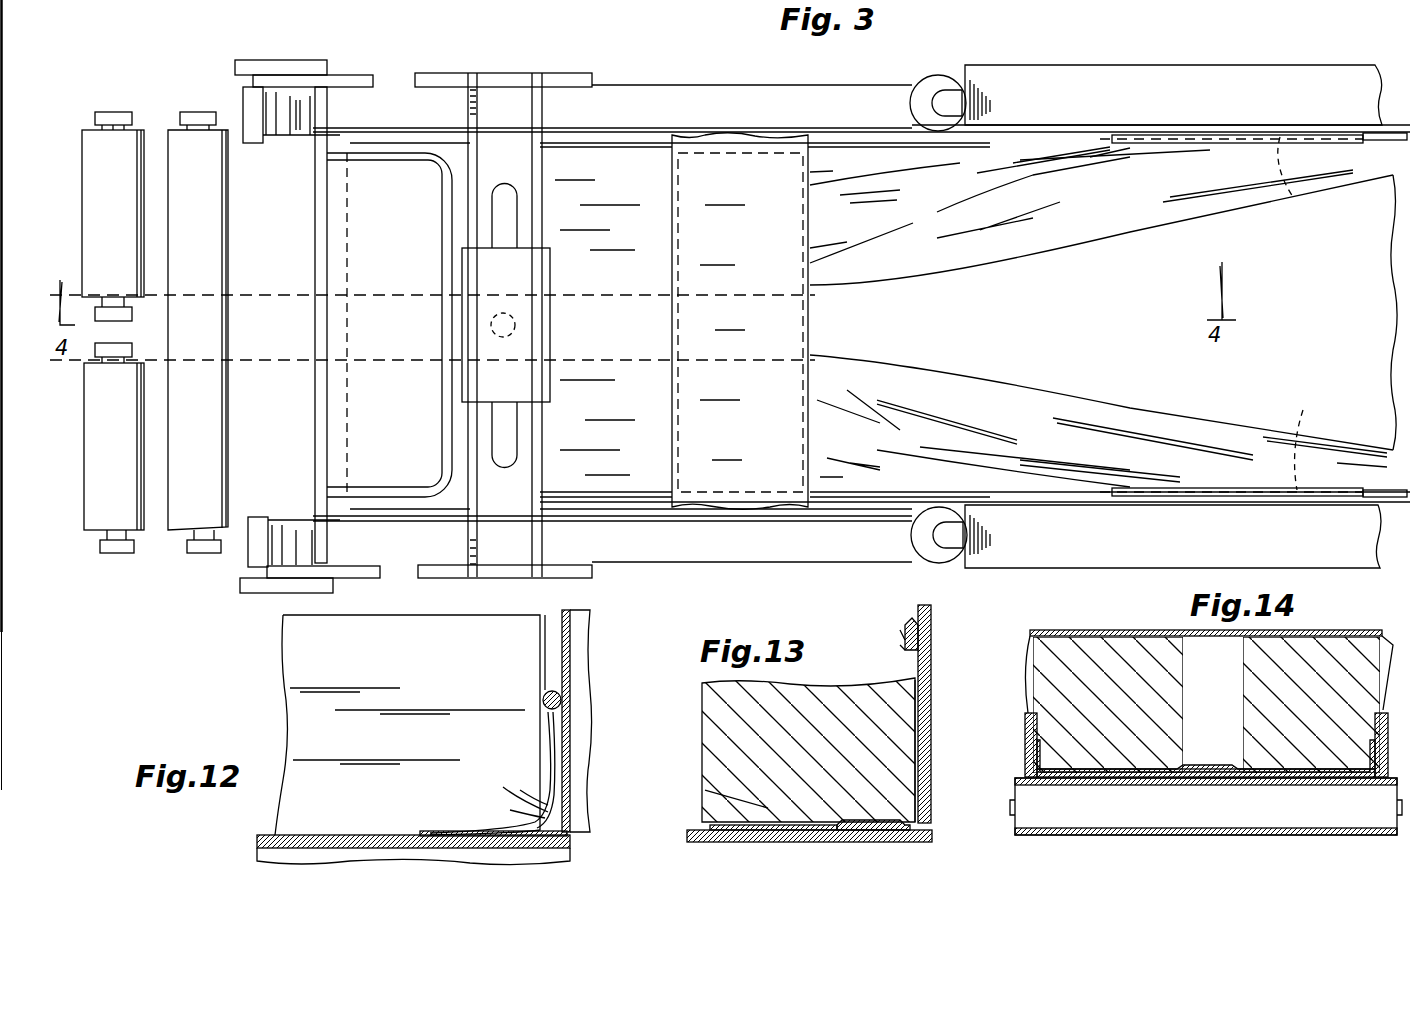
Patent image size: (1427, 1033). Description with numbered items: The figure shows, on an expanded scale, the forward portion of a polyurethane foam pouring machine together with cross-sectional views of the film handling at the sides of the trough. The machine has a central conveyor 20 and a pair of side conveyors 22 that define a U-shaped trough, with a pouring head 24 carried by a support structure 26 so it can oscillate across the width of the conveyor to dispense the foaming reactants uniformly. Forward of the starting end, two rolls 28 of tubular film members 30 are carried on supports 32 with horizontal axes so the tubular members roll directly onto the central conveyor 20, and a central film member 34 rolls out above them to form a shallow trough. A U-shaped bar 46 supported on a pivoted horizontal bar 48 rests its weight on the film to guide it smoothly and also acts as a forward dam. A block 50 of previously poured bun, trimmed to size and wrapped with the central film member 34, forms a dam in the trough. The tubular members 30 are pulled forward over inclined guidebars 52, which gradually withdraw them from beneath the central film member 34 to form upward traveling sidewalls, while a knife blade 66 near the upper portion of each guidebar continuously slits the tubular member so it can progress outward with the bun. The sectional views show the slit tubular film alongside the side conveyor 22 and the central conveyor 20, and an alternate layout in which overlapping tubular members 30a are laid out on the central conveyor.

In FIG. 12, the central conveyor 20 is at (270, 841).
In FIG. 13, the central conveyor 20 is at (700, 830).
In FIG. 14, the central conveyor 20 is at (1055, 785).
In FIG. 3, the side conveyors 22 is at (918, 80).
In FIG. 3, the pouring head 24 is at (540, 262).
In FIG. 3, the support structure 26 is at (570, 72).
In FIG. 3, the rolls 28 is at (90, 142).
In FIG. 3, the tubular film members 30 is at (883, 168).
In FIG. 12, the tubular film members 30 is at (572, 740).
In FIG. 13, the tubular film members 30 is at (932, 720).
In FIG. 14, the tubular members 30a is at (1035, 740).
In FIG. 3, the supports 32 is at (117, 110).
In FIG. 3, the central film member 34 is at (185, 143).
In FIG. 12, the central film member 34 is at (545, 805).
In FIG. 13, the central film member 34 is at (750, 800).
In FIG. 14, the central film member 34 is at (1140, 770).
In FIG. 3, the U-shaped bar 46 is at (445, 236).
In FIG. 3, the pivoted horizontal bar 48 is at (320, 122).
In FIG. 3, the block 50 is at (750, 155).
In FIG. 14, the block 50 is at (1337, 642).
In FIG. 3, the guidebars 52 is at (1110, 311).
In FIG. 12, the guidebars 52 is at (565, 700).
In FIG. 13, the knife blade 66 is at (930, 618).